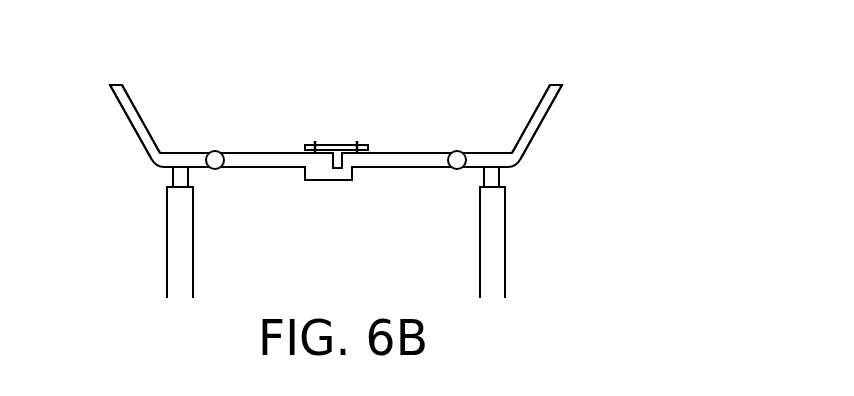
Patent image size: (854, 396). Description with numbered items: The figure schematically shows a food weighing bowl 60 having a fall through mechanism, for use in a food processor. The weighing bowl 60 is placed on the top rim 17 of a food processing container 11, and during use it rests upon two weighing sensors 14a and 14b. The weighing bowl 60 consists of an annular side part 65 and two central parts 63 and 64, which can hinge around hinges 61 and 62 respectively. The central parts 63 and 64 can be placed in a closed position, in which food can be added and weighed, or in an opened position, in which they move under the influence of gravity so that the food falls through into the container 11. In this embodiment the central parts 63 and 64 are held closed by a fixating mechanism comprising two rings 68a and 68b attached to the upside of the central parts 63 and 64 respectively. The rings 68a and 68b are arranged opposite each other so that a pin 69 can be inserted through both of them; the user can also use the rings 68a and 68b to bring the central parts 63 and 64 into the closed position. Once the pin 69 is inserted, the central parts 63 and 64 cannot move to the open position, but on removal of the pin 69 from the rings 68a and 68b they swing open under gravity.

The food weighing bowl 60 is at (641, 69).
The food processing container 11 is at (175, 277).
The weighing sensor 14a is at (173, 180).
The weighing sensor 14b is at (500, 180).
The top rim 17 is at (167, 188).
The hinge 61 is at (215, 151).
The hinge 62 is at (457, 151).
The central part 63 is at (261, 163).
The central part 64 is at (408, 162).
The annular side part 65 is at (119, 104).
The ring 68a is at (315, 143).
The ring 68b is at (357, 143).
The pin 69 is at (369, 147).